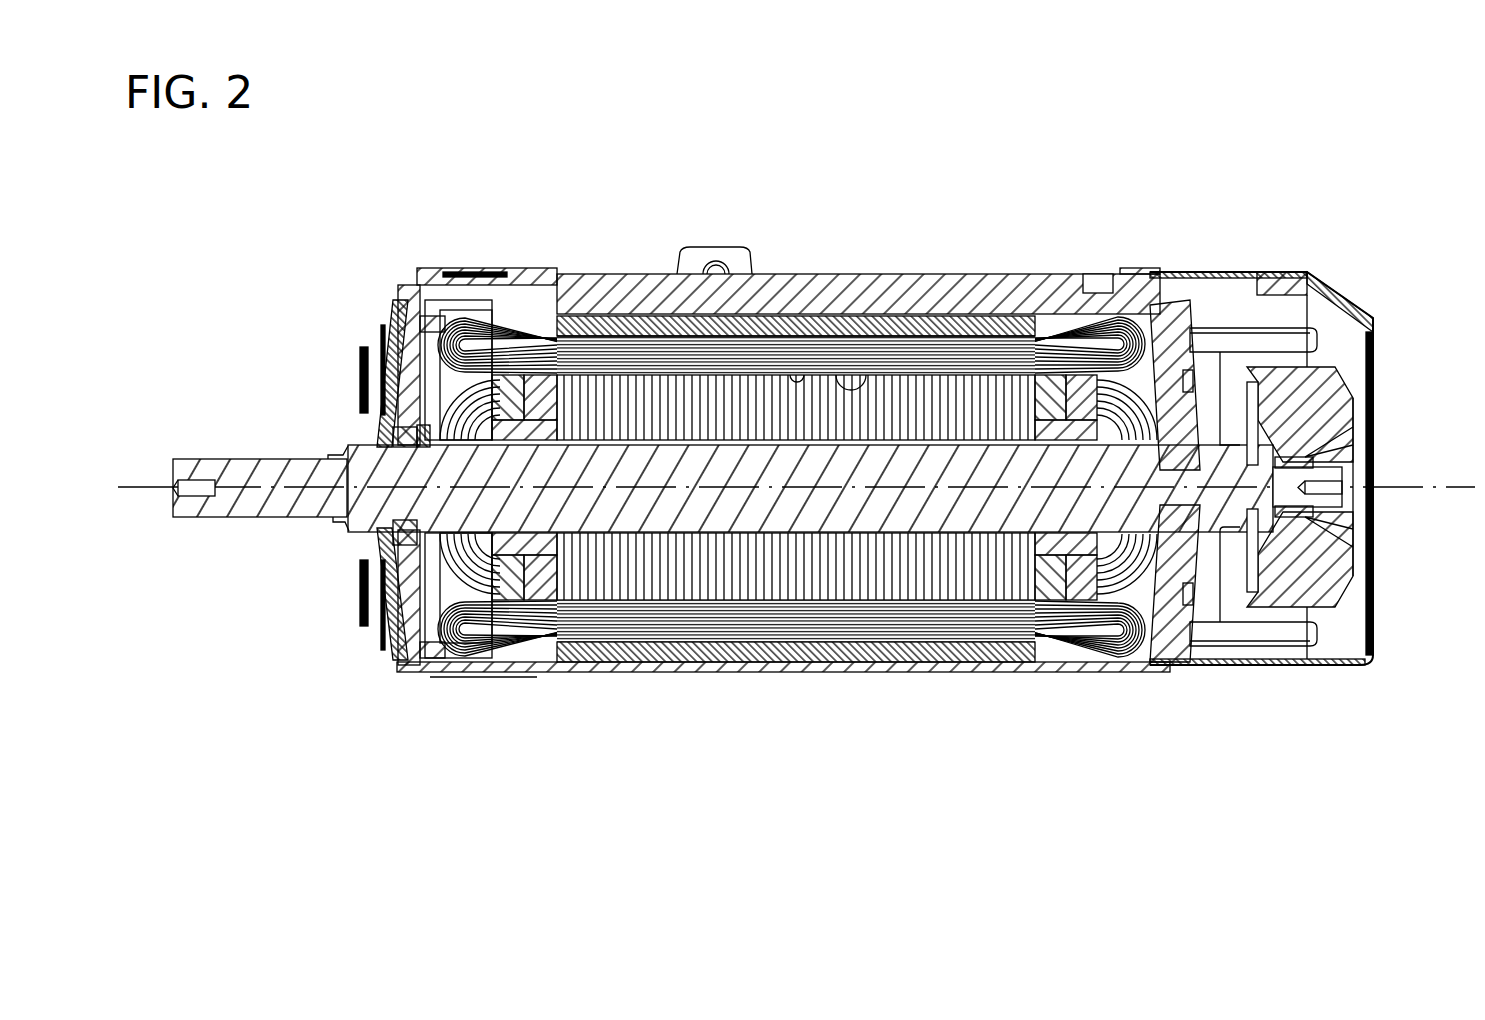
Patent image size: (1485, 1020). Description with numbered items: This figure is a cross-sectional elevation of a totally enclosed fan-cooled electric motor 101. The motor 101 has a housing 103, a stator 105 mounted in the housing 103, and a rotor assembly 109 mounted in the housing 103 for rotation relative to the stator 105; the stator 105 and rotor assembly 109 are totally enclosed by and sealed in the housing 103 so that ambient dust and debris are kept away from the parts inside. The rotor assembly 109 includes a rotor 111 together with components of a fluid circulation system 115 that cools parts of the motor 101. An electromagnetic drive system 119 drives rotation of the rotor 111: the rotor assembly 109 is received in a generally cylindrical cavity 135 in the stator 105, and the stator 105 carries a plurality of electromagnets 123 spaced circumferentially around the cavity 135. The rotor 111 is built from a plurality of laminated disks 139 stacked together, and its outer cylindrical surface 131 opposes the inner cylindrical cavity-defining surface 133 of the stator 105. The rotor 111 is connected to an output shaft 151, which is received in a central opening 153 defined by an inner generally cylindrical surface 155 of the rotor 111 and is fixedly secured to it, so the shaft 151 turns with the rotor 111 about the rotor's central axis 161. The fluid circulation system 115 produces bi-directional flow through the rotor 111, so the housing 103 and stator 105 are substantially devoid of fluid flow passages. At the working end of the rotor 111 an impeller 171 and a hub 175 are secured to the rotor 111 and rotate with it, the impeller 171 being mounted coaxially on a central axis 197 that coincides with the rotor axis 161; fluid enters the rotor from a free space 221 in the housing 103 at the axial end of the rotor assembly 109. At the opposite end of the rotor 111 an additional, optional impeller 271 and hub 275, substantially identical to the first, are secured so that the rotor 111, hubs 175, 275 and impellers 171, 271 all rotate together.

The electric motor 101 is at (306, 300).
The housing 103 is at (1012, 272).
The stator 105 is at (1050, 316).
The rotor assembly 109 is at (962, 600).
The rotor 111 is at (807, 583).
The fluid circulation system 115 is at (470, 648).
The electromagnetic drive system 119 is at (640, 358).
The electromagnets 123 is at (668, 353).
The outer cylindrical surface 131 is at (780, 375).
The inner cylindrical cavity-defining surface 133 is at (860, 375).
The cavity 135 is at (958, 375).
The laminated disks 139 is at (595, 437).
The output shaft 151 is at (757, 511).
The central opening 153 is at (447, 360).
The inner cylindrical surface 155 is at (603, 453).
The central axis 161 is at (1440, 487).
The impeller 171 is at (510, 586).
The hub 175 is at (557, 602).
The central axis 197 is at (1440, 487).
The free space 221 is at (1136, 272).
The impeller 271 is at (1097, 552).
The hub 275 is at (1160, 673).